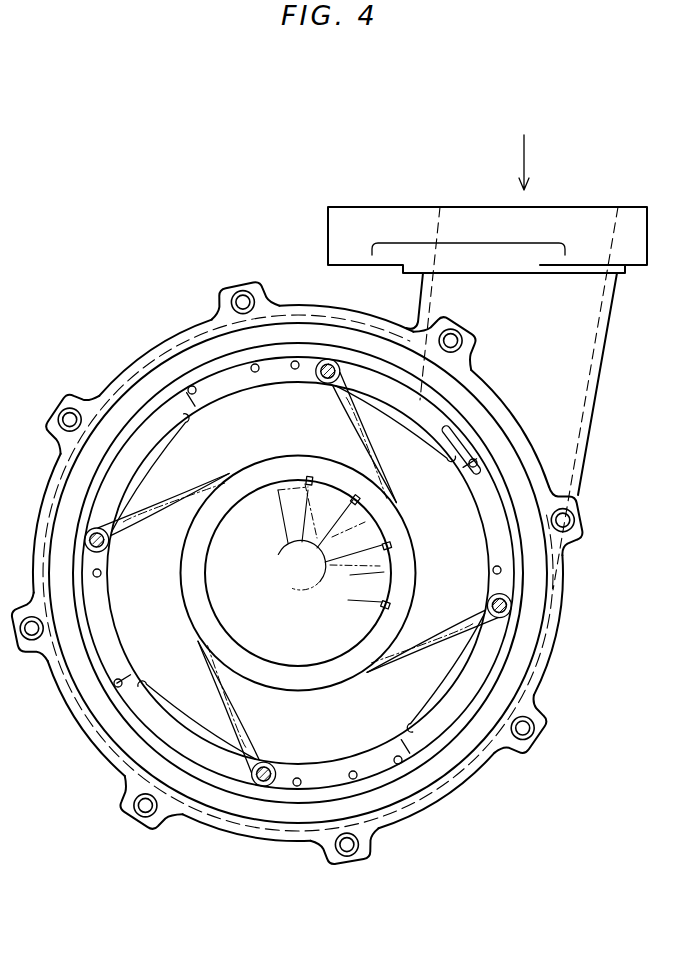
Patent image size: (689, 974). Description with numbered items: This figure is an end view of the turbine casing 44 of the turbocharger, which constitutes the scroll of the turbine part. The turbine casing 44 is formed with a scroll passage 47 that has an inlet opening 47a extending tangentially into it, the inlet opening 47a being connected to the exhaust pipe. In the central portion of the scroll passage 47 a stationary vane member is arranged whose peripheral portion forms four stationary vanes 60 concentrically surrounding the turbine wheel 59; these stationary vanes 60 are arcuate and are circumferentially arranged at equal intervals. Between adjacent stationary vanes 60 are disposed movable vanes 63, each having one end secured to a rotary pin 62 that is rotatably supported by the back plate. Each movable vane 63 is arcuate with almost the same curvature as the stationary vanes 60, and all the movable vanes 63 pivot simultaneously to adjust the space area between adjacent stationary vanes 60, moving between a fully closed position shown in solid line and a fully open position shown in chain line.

The turbine casing 44 is at (135, 357).
The scroll passage 47 is at (580, 469).
The inlet opening 47a is at (440, 227).
The turbine wheel 59 is at (378, 536).
The stationary vanes 60 is at (237, 378).
The rotary pins 62 is at (265, 793).
The movable vanes 63 is at (405, 418).